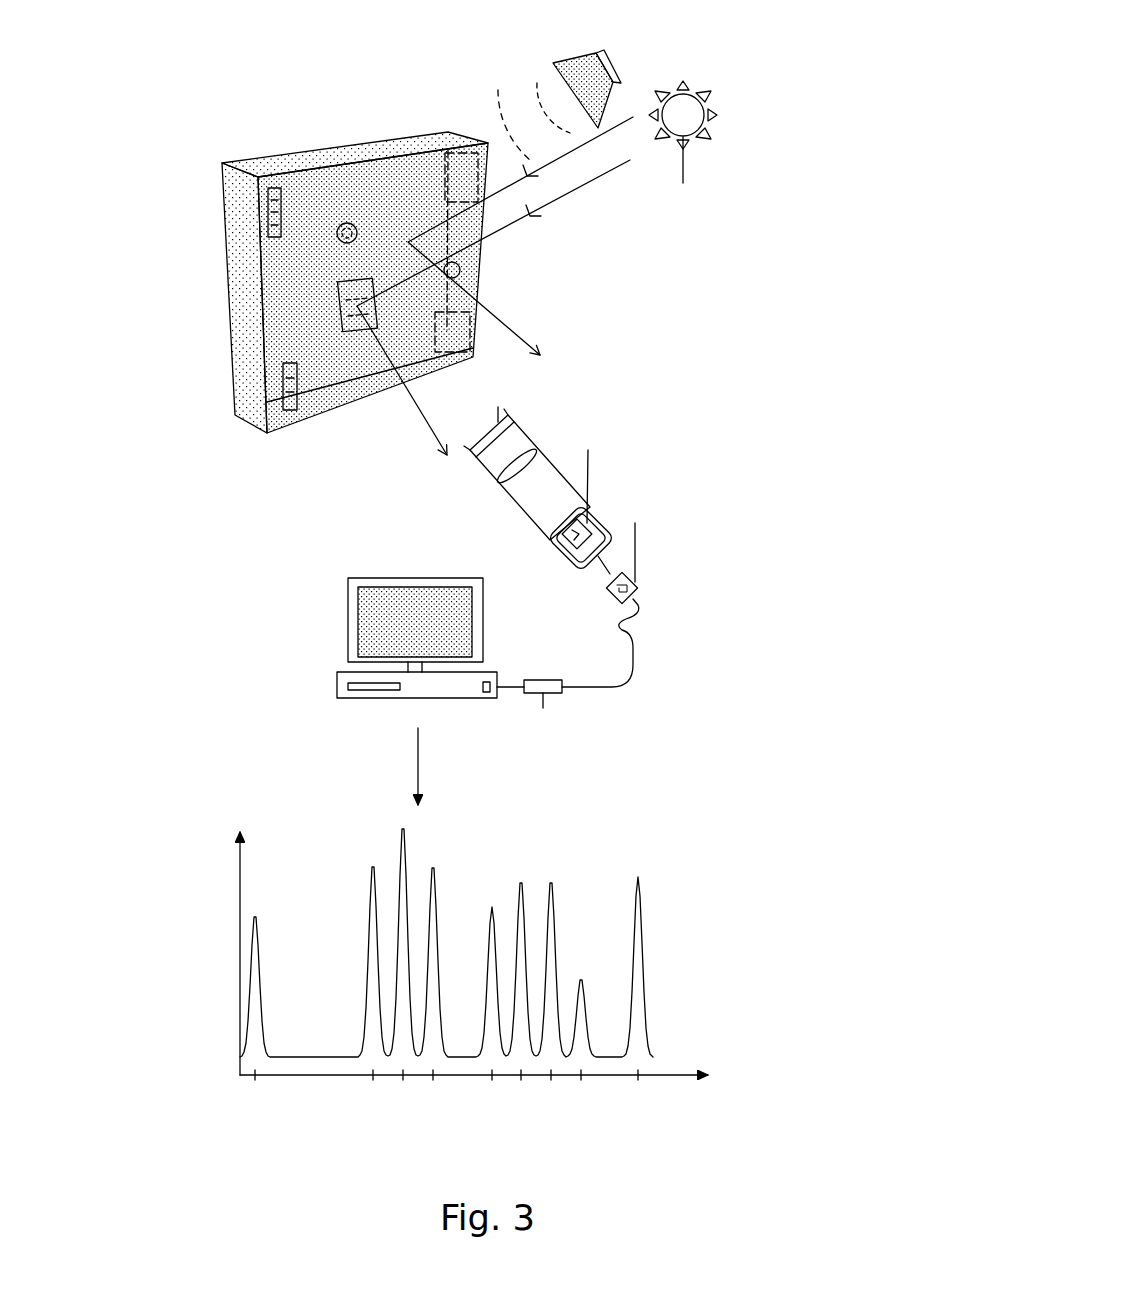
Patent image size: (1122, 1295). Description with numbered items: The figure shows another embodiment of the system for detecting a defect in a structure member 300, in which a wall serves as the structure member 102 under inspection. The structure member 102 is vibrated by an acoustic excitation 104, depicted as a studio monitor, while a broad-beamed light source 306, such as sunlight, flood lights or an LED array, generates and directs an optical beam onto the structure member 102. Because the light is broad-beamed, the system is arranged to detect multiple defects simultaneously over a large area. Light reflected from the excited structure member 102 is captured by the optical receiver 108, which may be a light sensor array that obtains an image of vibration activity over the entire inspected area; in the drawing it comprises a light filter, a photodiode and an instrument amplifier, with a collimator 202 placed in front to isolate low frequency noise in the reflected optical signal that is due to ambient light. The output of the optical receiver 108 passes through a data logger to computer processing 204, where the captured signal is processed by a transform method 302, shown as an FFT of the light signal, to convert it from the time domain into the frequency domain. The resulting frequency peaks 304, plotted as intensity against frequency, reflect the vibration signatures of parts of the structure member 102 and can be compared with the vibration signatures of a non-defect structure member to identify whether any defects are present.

The system for detecting a defect in a structure member 300 is at (760, 350).
The structure member 102 is at (227, 252).
The excitation 104 is at (599, 80).
The broad-beamed light source 306 is at (723, 100).
The optical receiver 108 is at (722, 405).
The collimator 202 is at (510, 475).
The signal processing 204 is at (431, 668).
The transform method 302 is at (510, 766).
The frequency peaks 304 is at (687, 912).